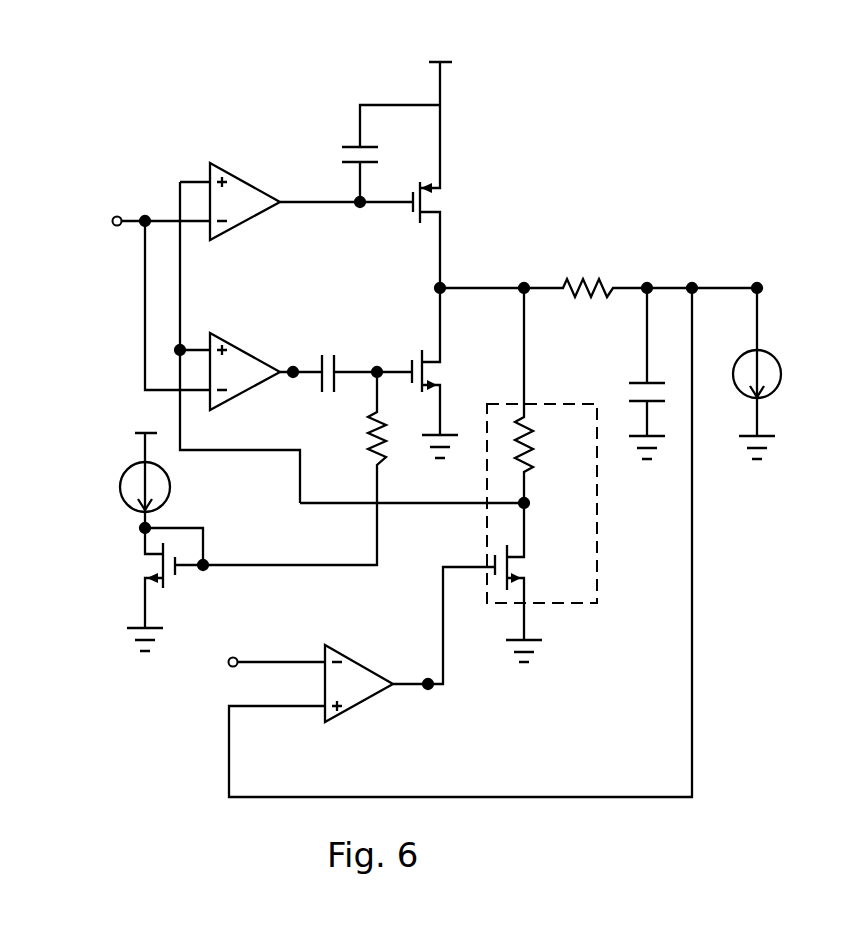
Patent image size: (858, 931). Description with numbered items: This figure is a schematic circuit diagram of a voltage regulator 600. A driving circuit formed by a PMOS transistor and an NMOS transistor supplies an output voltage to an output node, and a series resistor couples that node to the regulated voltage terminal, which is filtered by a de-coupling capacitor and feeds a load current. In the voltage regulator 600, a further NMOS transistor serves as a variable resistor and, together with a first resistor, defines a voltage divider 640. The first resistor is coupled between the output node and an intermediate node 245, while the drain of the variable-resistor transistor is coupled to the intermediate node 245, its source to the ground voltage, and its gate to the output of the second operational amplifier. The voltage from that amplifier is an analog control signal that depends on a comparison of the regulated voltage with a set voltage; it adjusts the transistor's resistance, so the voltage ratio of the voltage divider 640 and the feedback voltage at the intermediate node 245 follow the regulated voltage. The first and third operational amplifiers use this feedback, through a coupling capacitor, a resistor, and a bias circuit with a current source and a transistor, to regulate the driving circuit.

The voltage regulator 600 is at (450, 411).
The intermediate node 245 is at (521, 507).
The voltage divider 640 is at (597, 596).